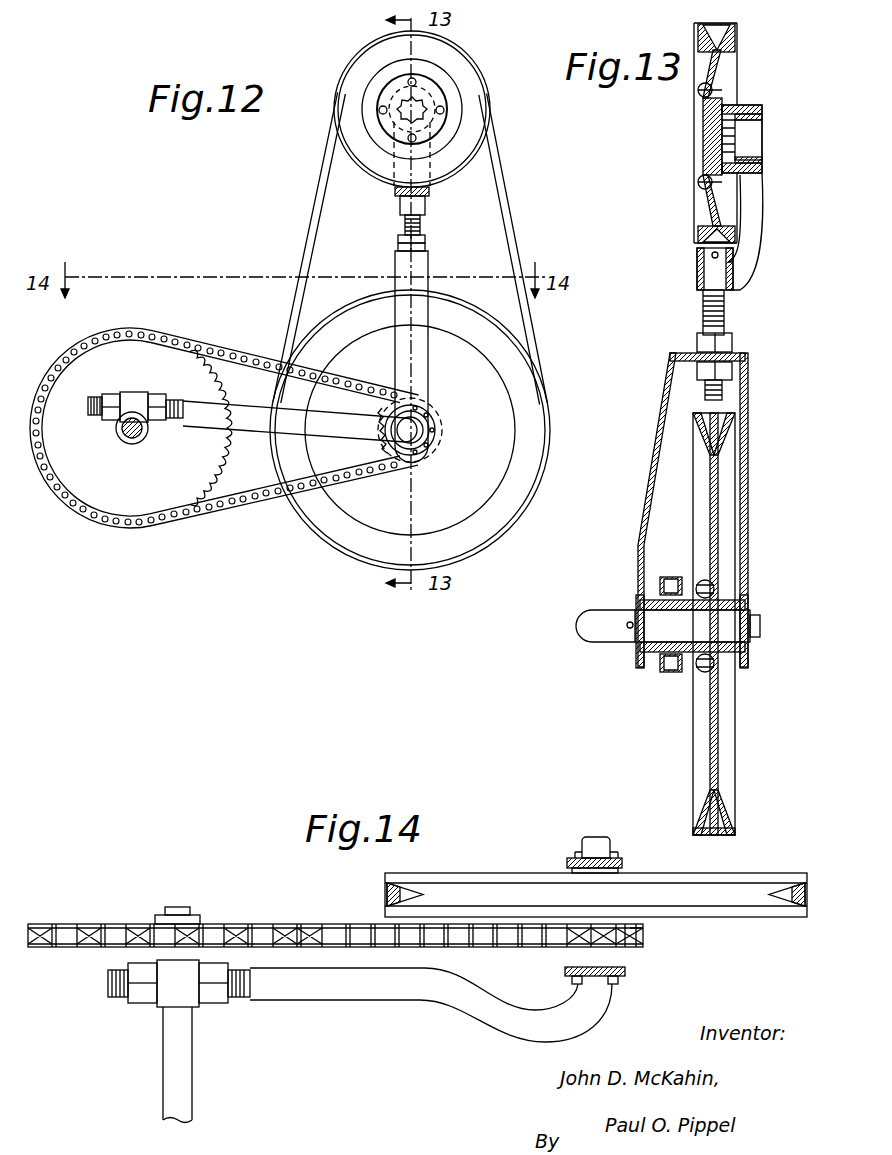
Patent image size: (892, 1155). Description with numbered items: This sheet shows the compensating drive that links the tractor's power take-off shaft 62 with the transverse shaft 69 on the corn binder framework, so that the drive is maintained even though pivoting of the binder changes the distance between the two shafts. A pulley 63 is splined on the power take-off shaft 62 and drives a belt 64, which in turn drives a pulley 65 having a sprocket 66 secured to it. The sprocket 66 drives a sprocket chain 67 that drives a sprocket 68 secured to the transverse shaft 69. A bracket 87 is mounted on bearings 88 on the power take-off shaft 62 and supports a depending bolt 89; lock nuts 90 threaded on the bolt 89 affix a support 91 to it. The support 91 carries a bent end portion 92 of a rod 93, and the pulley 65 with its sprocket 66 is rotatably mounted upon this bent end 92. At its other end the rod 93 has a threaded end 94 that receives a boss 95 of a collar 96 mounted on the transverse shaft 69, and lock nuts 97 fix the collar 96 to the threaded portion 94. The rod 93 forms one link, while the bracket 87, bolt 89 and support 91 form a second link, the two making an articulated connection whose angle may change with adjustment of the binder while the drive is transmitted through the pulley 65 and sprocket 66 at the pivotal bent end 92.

In FIG. 12, the power take-off shaft 62 is at (420, 106).
In FIG. 13, the power take-off shaft 62 is at (763, 133).
In FIG. 12, the pulley 63 is at (472, 104).
In FIG. 13, the pulley 63 is at (712, 213).
In FIG. 12, the belt 64 is at (305, 258).
In FIG. 13, the belt 64 is at (713, 836).
In FIG. 14, the belt 64 is at (800, 880).
In FIG. 12, the pulley 65 is at (505, 418).
In FIG. 13, the pulley 65 is at (710, 508).
In FIG. 14, the pulley 65 is at (670, 866).
In FIG. 12, the sprocket 66 is at (390, 445).
In FIG. 13, the sprocket 66 is at (680, 568).
In FIG. 14, the sprocket 66 is at (640, 947).
In FIG. 12, the sprocket chain 67 is at (238, 352).
In FIG. 13, the sprocket chain 67 is at (662, 672).
In FIG. 14, the sprocket chain 67 is at (470, 947).
In FIG. 12, the sprocket 68 is at (135, 500).
In FIG. 14, the sprocket 68 is at (225, 924).
In FIG. 12, the transverse shaft 69 is at (135, 442).
In FIG. 14, the transverse shaft 69 is at (195, 1098).
In FIG. 12, the bracket 87 is at (455, 116).
In FIG. 13, the bracket 87 is at (748, 105).
In FIG. 13, the bearings 88 is at (760, 158).
In FIG. 12, the bolt 89 is at (420, 228).
In FIG. 13, the bolt 89 is at (712, 277).
In FIG. 12, the lock nuts 90 is at (425, 248).
In FIG. 13, the lock nuts 90 is at (732, 378).
In FIG. 12, the support 91 is at (415, 270).
In FIG. 13, the support 91 is at (748, 438).
In FIG. 14, the support 91 is at (625, 975).
In FIG. 12, the bent end portion 92 is at (437, 432).
In FIG. 13, the bent end portion 92 is at (742, 618).
In FIG. 14, the bent end portion 92 is at (600, 838).
In FIG. 12, the rod 93 is at (253, 412).
In FIG. 13, the rod 93 is at (578, 628).
In FIG. 14, the rod 93 is at (395, 1000).
In FIG. 12, the threaded end 94 is at (175, 420).
In FIG. 14, the threaded end 94 is at (242, 998).
In FIG. 12, the boss 95 is at (143, 392).
In FIG. 14, the boss 95 is at (178, 1008).
In FIG. 12, the collar 96 is at (117, 440).
In FIG. 12, the lock nuts 97 is at (160, 394).
In FIG. 14, the lock nuts 97 is at (210, 1005).